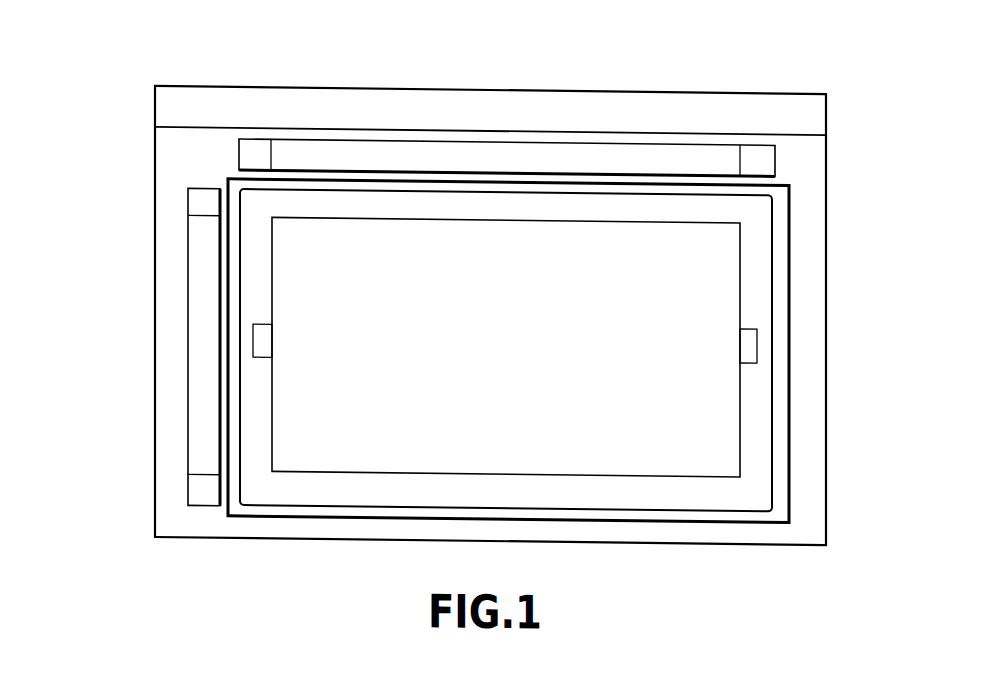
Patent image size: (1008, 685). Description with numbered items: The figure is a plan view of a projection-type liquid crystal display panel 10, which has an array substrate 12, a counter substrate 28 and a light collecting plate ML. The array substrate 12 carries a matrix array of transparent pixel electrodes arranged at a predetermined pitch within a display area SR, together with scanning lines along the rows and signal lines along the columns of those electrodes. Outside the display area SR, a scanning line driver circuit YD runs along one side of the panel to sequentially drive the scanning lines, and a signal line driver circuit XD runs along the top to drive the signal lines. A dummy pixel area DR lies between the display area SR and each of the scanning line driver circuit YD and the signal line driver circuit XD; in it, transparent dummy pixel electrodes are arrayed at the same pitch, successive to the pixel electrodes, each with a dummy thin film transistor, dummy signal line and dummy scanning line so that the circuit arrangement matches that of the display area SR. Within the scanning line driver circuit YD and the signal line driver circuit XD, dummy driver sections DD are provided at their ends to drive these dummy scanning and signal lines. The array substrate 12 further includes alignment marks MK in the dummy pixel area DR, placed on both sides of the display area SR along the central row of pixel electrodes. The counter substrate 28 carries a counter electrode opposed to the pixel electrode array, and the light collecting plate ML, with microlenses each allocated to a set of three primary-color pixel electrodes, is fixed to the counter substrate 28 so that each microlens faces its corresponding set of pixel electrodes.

The liquid crystal display panel 10 is at (833, 245).
The array substrate 12 is at (817, 112).
The counter substrate 28 is at (815, 152).
The light collecting plate ML is at (789, 422).
The signal line driver circuit XD is at (445, 147).
The scanning line driver circuit YD is at (198, 404).
The dummy driver section DD is at (257, 146).
The display area SR is at (506, 347).
The dummy pixel area DR is at (259, 257).
The alignment mark MK is at (264, 339).